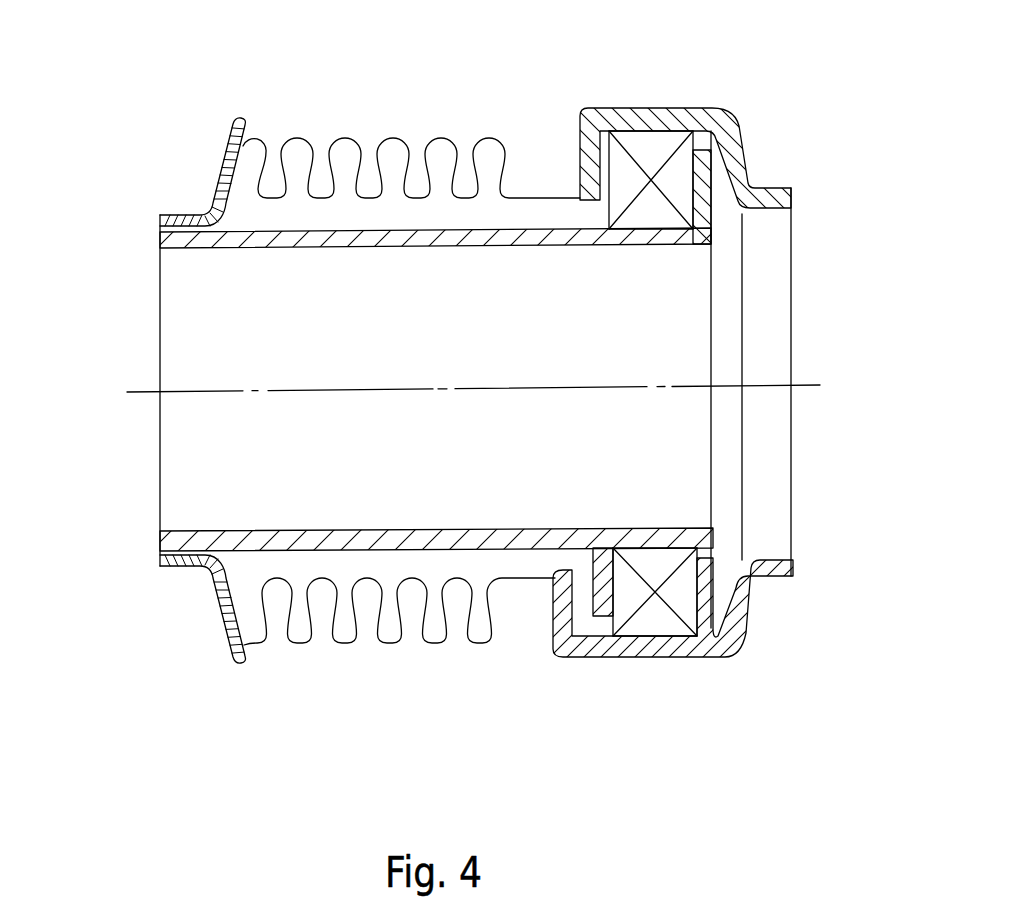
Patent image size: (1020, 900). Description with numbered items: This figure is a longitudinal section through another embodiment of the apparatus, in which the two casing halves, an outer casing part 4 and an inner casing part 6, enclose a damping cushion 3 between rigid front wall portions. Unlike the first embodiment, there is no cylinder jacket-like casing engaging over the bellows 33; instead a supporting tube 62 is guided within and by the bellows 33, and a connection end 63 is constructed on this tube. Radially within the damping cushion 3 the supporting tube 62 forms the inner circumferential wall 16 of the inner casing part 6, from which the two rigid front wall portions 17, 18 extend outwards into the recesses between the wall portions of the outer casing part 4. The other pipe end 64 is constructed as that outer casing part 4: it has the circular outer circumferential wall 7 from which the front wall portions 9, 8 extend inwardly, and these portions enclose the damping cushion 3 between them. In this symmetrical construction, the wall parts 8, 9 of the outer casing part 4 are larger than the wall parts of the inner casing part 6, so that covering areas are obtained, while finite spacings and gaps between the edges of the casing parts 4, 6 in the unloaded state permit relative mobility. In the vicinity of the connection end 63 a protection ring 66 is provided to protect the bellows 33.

The damping cushion 3 is at (670, 147).
The casing part 4 is at (664, 100).
The casing part 6 is at (677, 248).
The outer circumferential wall 7 is at (604, 120).
The front wall portion 8 is at (707, 615).
The front wall portion 9 is at (603, 608).
The inner circumferential wall 16 is at (636, 236).
The wall portion 17 is at (598, 561).
The wall portion 18 is at (704, 160).
The bellows 33 is at (352, 136).
The supporting tube 62 is at (260, 248).
The connection end 63 is at (163, 243).
The pipe end 64 is at (780, 212).
The protection ring 66 is at (207, 170).